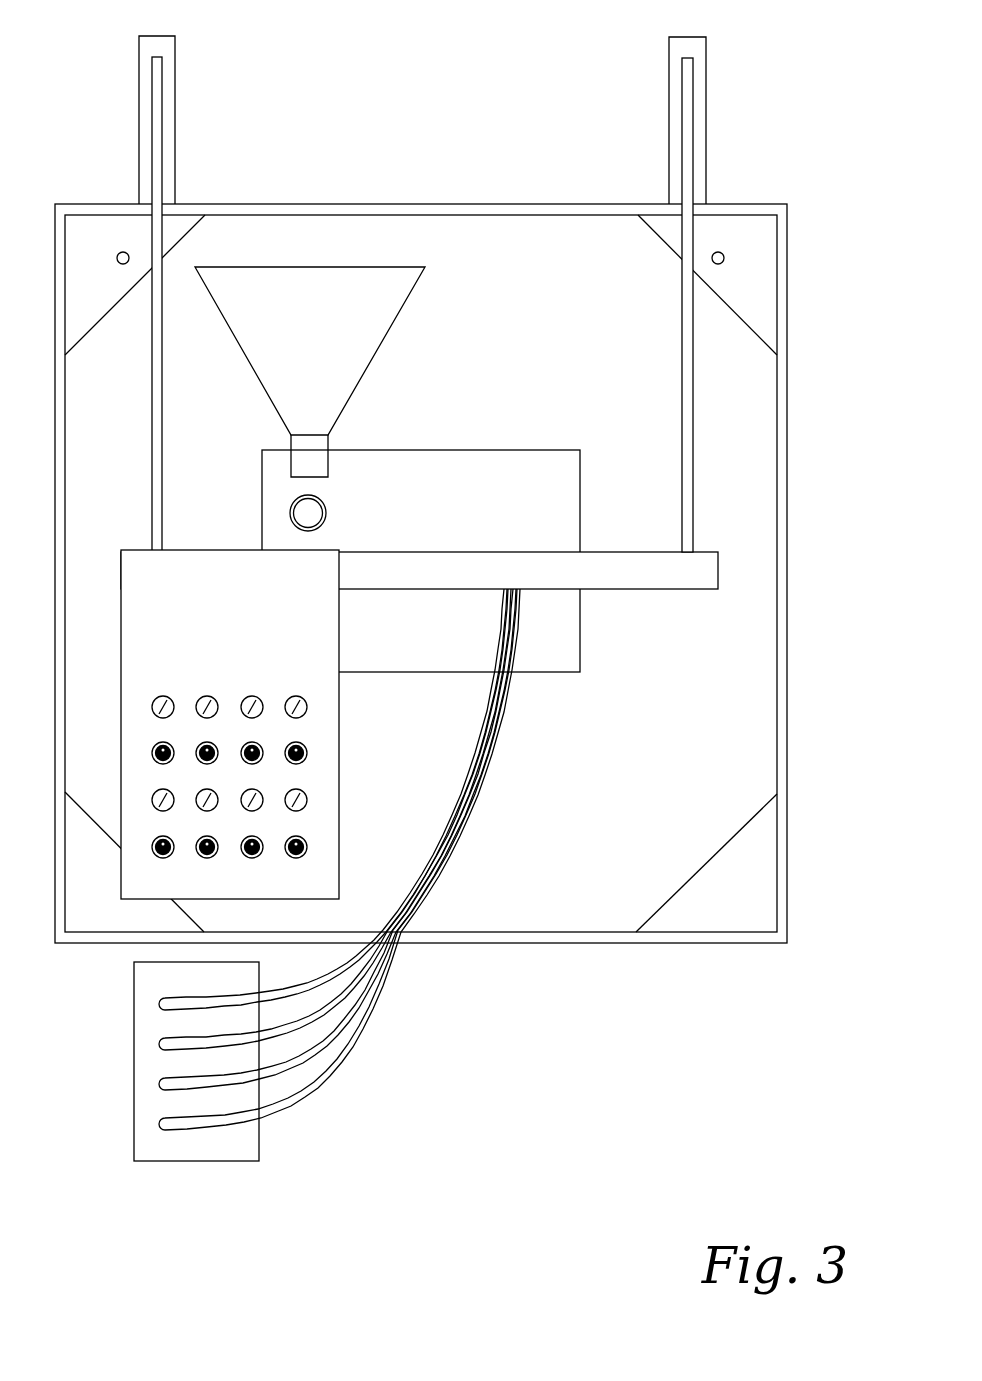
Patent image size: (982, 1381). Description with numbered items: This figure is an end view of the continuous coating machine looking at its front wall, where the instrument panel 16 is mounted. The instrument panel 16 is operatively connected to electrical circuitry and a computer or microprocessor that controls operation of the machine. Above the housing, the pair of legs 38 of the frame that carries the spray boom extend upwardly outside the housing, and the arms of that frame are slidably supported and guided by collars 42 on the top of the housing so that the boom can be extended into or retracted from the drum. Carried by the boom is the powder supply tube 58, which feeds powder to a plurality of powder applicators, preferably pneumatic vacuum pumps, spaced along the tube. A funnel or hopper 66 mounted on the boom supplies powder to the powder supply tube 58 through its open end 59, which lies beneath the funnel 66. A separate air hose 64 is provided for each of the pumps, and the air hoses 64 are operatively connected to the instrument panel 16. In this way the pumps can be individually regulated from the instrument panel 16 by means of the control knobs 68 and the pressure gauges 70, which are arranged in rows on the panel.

The instrument panel 16 is at (155, 602).
The legs 38 is at (150, 80).
The collars 42 is at (157, 35).
The powder supply tube 58 is at (322, 500).
The open end 59 is at (312, 515).
The air hose 64 is at (383, 980).
The funnel or hopper 66 is at (377, 352).
The control knobs 68 is at (213, 745).
The pressure gauges 70 is at (213, 699).